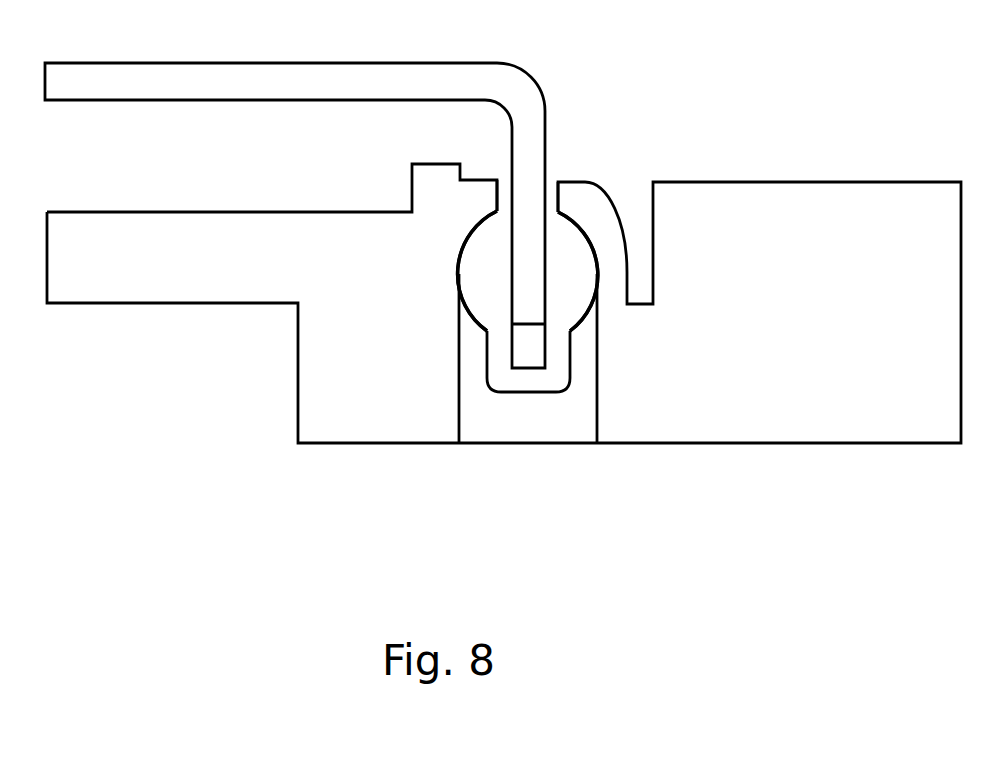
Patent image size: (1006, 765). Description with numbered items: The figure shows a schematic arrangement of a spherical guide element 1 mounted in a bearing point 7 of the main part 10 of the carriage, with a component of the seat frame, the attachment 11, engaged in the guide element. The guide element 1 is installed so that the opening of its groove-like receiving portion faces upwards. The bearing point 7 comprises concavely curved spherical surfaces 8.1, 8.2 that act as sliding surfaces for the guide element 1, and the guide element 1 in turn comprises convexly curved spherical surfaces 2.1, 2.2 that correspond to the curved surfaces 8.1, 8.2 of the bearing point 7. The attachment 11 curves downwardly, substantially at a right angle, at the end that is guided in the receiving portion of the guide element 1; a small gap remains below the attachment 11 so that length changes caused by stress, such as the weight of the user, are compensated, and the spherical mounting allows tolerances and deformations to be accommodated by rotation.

The guide element 1 is at (560, 313).
The convexly curved spherical surface 2.1 is at (485, 271).
The convexly curved spherical surface 2.2 is at (577, 271).
The bearing point 7 is at (573, 420).
The concavely curved spherical surface 8.1 is at (488, 243).
The concavely curved spherical surface 8.2 is at (578, 252).
The main part 10 is at (504, 303).
The attachment 11 is at (335, 80).